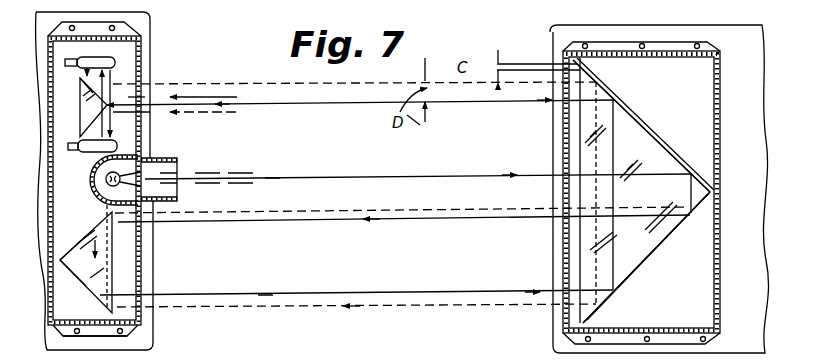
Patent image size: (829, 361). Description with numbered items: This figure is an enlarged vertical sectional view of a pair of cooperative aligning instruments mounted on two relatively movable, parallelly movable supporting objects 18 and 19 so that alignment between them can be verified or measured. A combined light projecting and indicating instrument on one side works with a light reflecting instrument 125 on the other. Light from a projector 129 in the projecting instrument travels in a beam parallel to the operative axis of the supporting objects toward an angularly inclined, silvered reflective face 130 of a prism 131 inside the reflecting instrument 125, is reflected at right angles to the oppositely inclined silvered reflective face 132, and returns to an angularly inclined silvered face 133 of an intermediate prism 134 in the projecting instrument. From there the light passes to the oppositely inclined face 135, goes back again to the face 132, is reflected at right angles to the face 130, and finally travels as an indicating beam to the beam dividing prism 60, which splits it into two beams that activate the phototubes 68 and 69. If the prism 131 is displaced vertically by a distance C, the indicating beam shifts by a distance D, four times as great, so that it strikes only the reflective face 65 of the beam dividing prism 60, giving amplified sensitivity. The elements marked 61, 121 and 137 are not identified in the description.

The supporting object 18 is at (143, 332).
The supporting object 19 is at (747, 277).
The beam dividing prism 60 is at (88, 97).
The reflecting face of prism 61 is at (89, 106).
The reflective face 65 is at (81, 85).
The phototube 68 is at (112, 143).
The phototube 69 is at (95, 58).
The mounting frame 121 is at (50, 125).
The light reflecting instrument 125 is at (720, 53).
The projector 129 is at (97, 182).
The silvered reflective face 130 is at (675, 155).
The prism 131 is at (610, 95).
The silvered reflective face 132 is at (642, 262).
The silvered face 133 is at (78, 240).
The intermediate prism 134 is at (77, 270).
The face 135 is at (97, 273).
The housing bottom 137 is at (95, 348).